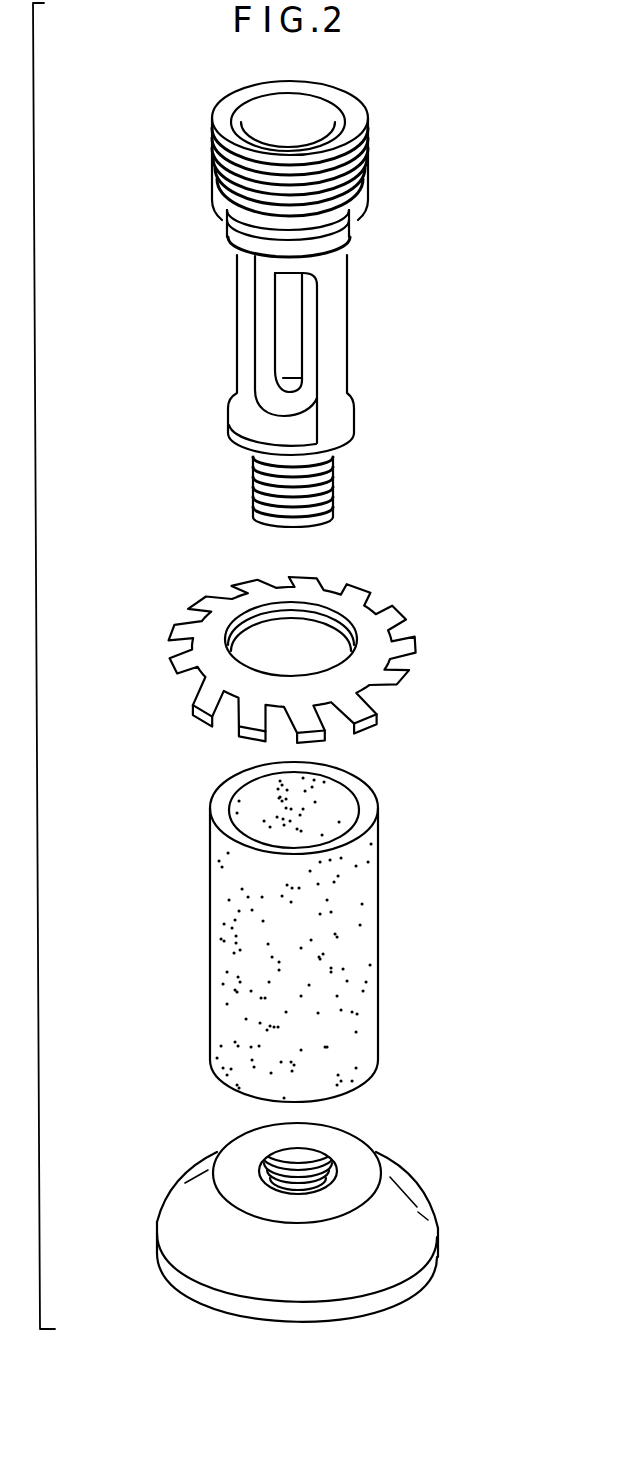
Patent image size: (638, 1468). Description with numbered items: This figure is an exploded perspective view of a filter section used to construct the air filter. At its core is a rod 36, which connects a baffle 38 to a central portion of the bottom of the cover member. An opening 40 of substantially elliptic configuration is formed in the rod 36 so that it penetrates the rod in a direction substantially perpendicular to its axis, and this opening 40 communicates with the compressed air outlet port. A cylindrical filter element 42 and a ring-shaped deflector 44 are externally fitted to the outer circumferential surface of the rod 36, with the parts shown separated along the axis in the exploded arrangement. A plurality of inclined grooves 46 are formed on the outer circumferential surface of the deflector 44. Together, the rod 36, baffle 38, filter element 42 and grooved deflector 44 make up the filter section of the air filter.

The rod 36 is at (290, 304).
The baffle 38 is at (390, 1177).
The opening 40 is at (255, 323).
The cylindrical filter element 42 is at (353, 888).
The ring-shaped deflector 44 is at (315, 658).
The inclined grooves 46 is at (233, 703).